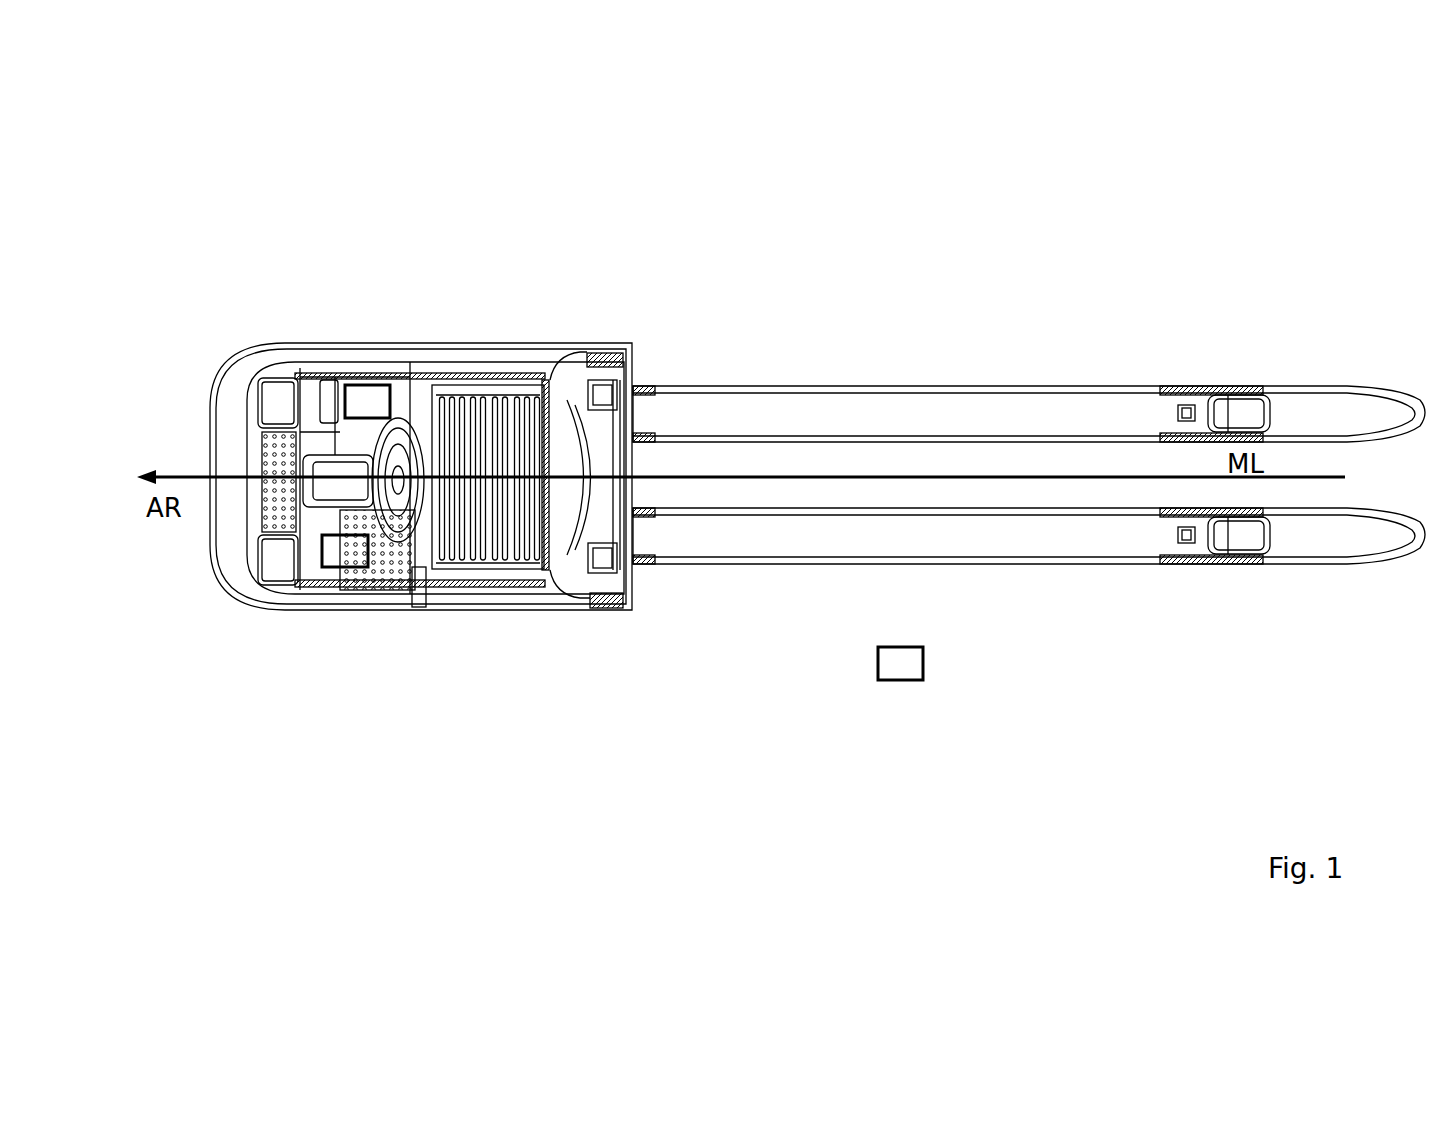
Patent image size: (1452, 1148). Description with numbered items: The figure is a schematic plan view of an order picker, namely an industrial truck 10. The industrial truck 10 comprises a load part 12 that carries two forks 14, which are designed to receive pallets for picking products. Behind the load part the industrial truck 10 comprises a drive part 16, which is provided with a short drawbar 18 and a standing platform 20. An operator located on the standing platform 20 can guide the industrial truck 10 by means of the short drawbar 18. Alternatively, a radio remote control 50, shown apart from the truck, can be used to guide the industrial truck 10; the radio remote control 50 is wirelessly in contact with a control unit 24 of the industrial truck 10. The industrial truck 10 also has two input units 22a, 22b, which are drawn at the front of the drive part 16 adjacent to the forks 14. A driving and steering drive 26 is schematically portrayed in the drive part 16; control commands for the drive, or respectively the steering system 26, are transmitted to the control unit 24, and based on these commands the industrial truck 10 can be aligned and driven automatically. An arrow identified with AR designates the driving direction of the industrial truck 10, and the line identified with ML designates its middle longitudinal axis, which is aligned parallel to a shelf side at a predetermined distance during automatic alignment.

The industrial truck 10 is at (682, 225).
The load part 12 is at (948, 338).
The forks 14 is at (960, 422).
The drive part 16 is at (497, 297).
The short drawbar 18 is at (335, 468).
The standing platform 20 is at (481, 520).
The input unit 22a is at (612, 598).
The input unit 22b is at (602, 353).
The control unit 24 is at (368, 392).
The driving and steering drive 26 is at (335, 563).
The radio remote control 50 is at (905, 670).